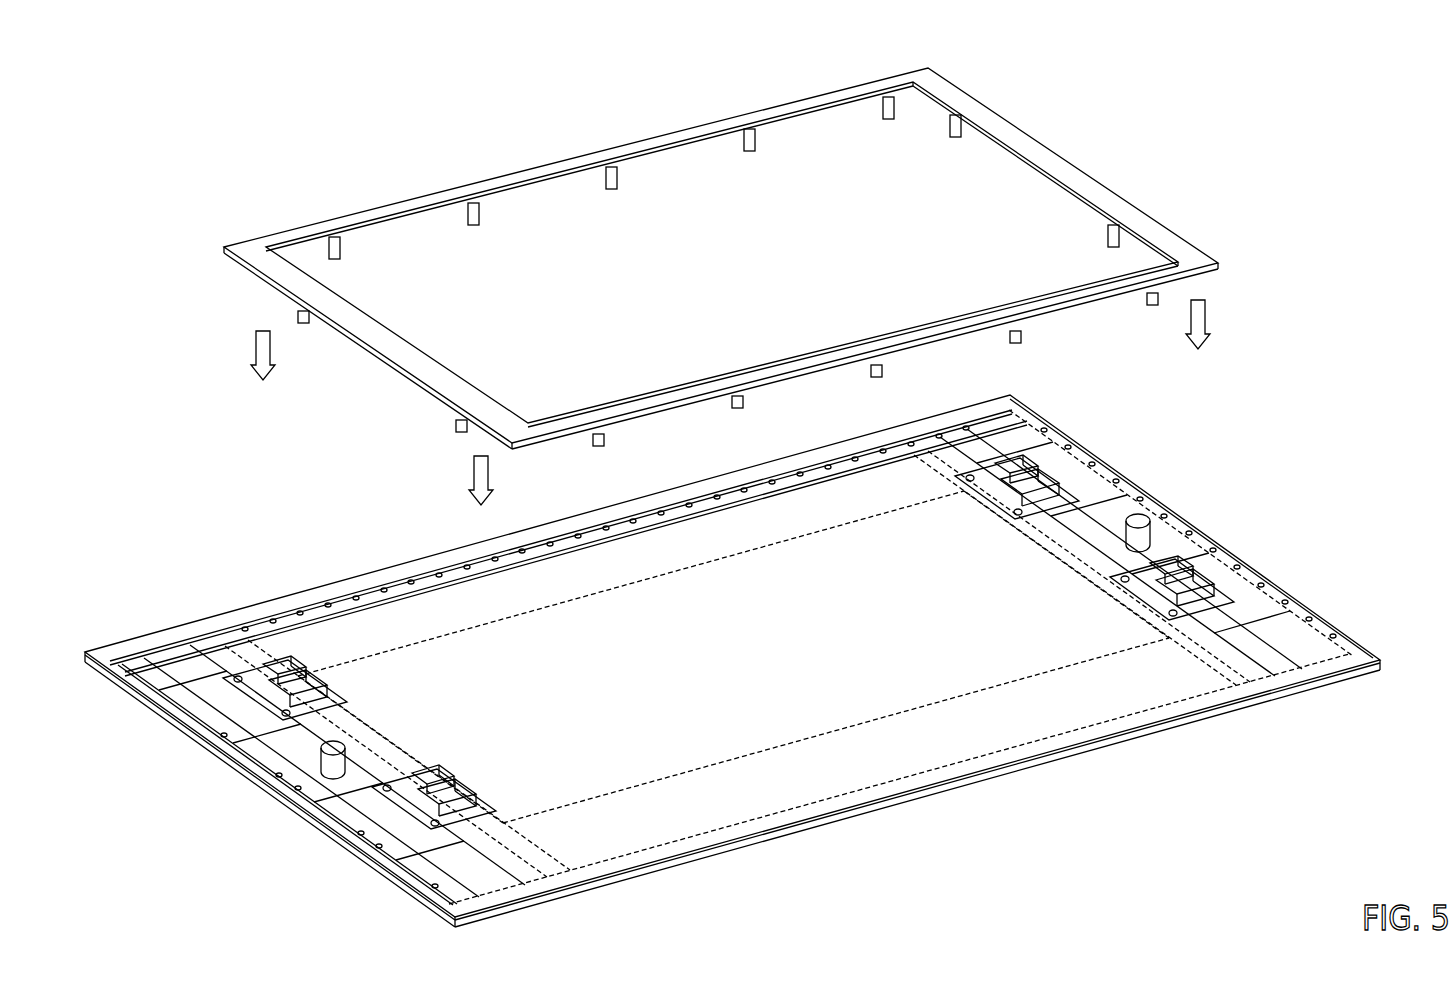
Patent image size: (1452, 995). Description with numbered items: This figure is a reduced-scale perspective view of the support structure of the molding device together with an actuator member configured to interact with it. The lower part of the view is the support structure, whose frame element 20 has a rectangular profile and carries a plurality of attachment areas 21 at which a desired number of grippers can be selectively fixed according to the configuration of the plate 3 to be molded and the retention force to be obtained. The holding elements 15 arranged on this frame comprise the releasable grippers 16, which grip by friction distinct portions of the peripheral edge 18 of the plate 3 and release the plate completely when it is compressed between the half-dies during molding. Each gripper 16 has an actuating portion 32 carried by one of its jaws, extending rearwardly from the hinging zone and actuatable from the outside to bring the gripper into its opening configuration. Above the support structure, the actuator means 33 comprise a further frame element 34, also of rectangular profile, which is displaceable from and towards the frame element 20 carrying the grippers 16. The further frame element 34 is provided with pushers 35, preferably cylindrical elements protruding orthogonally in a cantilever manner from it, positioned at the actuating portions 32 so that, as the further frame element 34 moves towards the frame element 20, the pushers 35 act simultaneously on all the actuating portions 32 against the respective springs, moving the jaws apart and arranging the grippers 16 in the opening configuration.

The plate 3 is at (822, 552).
The holding elements 15 is at (1087, 440).
The releasable grippers 16 is at (990, 504).
The peripheral edge 18 is at (698, 572).
The frame element 20 is at (957, 795).
The attachment areas 21 is at (1117, 467).
The actuating portion 32 is at (1040, 463).
The actuator means 33 is at (1075, 166).
The further frame element 34 is at (583, 158).
The pushers 35 is at (952, 130).